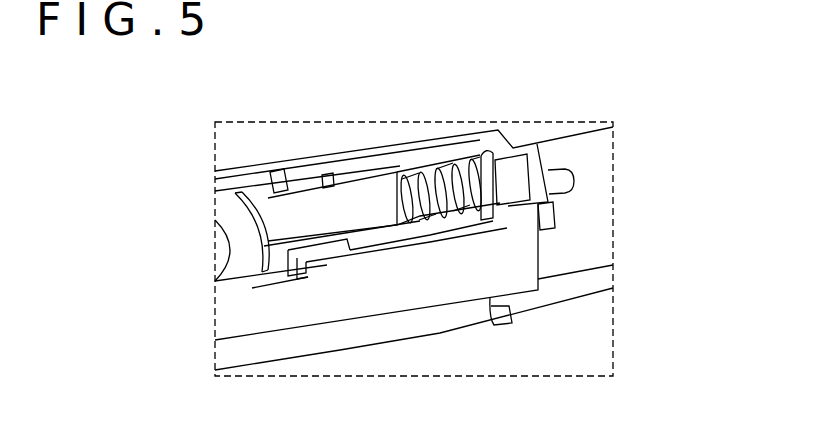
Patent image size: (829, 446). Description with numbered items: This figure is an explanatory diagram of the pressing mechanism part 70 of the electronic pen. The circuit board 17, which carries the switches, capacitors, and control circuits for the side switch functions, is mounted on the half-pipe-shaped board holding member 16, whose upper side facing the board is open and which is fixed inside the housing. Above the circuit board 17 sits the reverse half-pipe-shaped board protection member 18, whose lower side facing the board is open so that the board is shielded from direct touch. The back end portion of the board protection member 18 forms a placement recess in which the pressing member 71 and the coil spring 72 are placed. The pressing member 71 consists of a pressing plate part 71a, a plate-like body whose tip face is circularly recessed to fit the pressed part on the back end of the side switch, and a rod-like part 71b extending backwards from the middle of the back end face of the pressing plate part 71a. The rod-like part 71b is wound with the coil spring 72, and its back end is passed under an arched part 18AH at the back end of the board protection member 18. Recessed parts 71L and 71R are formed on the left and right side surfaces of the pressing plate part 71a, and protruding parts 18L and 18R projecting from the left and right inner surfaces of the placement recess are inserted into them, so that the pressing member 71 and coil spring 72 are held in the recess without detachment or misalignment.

The board holding member 16 is at (367, 330).
The circuit board 17 is at (578, 145).
The board protection member 18 is at (462, 283).
The arched part 18AH is at (530, 165).
The protruding part 18L is at (322, 253).
The protruding part 18R is at (300, 178).
The pressing mechanism part 70 is at (446, 68).
The pressing member 71 is at (353, 193).
The pressing plate part 71a is at (284, 223).
The rod-like part 71b is at (467, 190).
The recessed part 71L is at (300, 263).
The recessed part 71R is at (275, 172).
The coil spring 72 is at (430, 172).